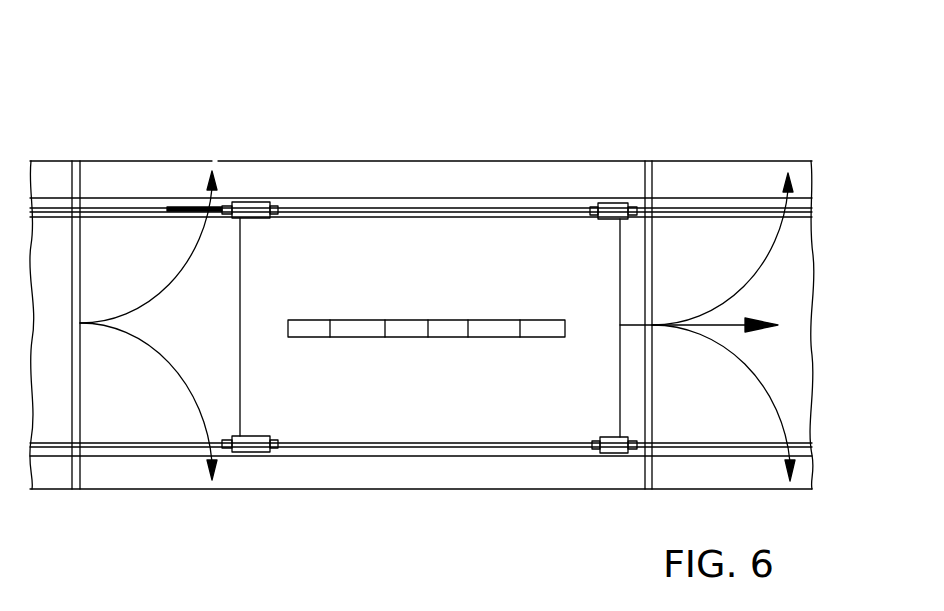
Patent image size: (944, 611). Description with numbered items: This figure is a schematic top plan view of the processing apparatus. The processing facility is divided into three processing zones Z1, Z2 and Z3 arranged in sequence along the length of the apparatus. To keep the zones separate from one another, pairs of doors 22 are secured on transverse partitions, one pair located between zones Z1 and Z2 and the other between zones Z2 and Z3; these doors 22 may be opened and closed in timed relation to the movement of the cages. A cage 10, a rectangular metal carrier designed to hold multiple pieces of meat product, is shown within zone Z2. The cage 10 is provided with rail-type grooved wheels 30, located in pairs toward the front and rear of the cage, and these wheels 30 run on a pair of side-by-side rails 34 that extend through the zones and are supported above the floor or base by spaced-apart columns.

The cage 10 is at (452, 224).
The doors 22 is at (80, 245).
The rail-type grooved wheels 30 is at (247, 205).
The rails 34 is at (168, 205).
The processing zone Z1 is at (49, 140).
The processing zone Z2 is at (336, 140).
The processing zone Z3 is at (729, 140).